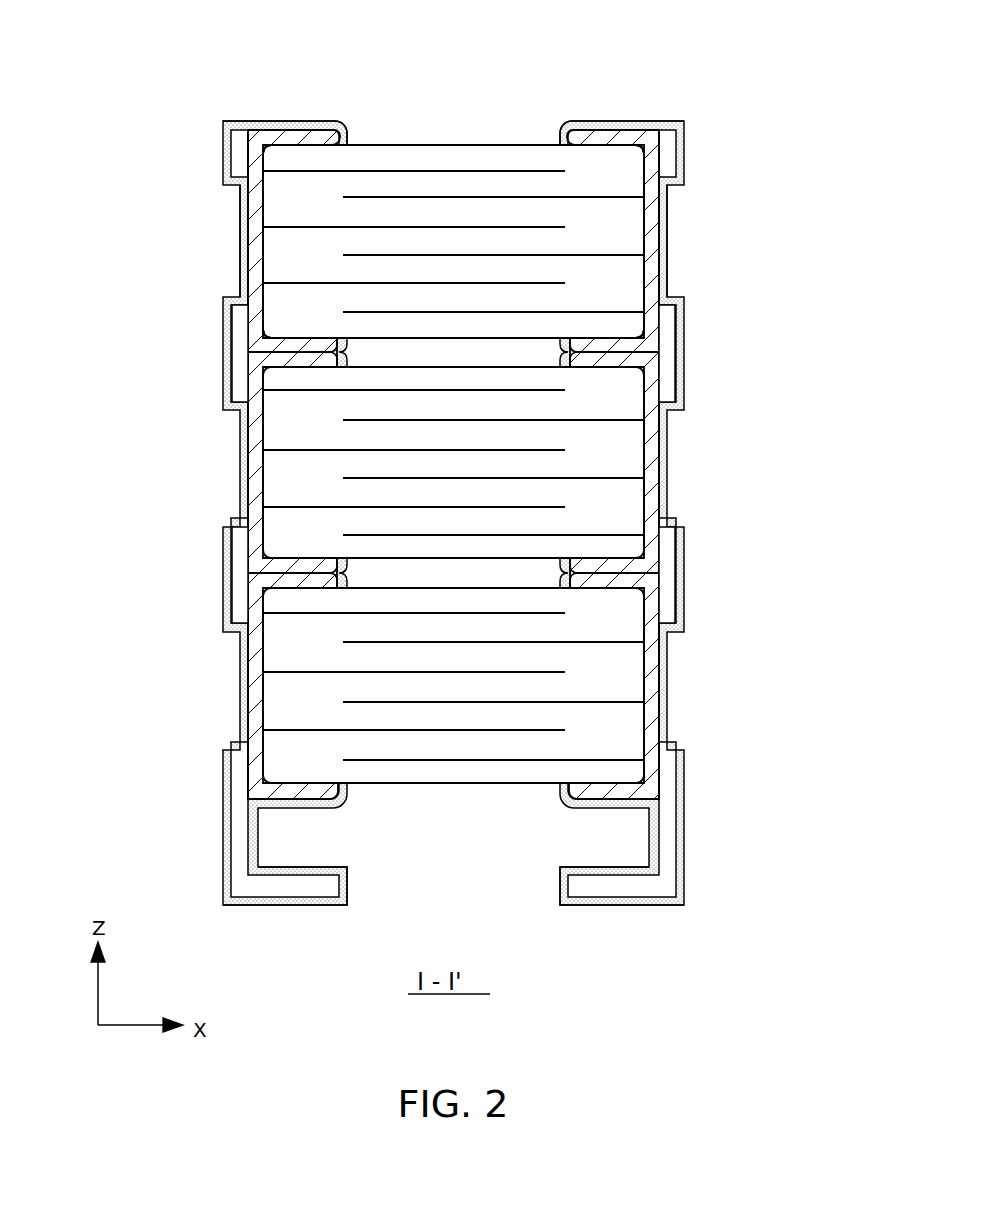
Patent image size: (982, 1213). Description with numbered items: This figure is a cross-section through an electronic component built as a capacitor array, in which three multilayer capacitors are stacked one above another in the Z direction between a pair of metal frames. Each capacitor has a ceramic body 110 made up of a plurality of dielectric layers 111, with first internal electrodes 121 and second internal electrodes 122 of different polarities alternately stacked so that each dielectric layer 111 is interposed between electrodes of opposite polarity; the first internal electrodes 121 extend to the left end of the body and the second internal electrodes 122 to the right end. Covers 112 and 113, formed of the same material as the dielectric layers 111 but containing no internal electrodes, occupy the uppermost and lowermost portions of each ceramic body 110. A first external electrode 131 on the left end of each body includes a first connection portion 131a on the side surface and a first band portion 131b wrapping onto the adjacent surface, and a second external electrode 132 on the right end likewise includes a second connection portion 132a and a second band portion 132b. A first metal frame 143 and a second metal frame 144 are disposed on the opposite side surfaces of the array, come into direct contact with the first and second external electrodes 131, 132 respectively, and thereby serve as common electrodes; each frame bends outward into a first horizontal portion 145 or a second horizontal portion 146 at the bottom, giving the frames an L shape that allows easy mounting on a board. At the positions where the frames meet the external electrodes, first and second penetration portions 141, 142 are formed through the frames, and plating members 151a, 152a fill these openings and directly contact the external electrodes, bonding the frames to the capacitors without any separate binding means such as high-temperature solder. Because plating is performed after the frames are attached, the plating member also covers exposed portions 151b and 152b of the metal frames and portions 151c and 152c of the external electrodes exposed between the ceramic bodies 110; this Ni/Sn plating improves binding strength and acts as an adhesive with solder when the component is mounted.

The ceramic body 110 is at (418, 145).
The dielectric layer 111 is at (453, 233).
The cover 112 is at (490, 157).
The cover 113 is at (365, 327).
The first internal electrode 121 is at (526, 165).
The second internal electrode 122 is at (576, 197).
The first external electrode 131 is at (355, 43).
The first connection portion 131a is at (242, 150).
The first band portion 131b is at (314, 135).
The second external electrode 132 is at (747, 43).
The second connection portion 132a is at (668, 150).
The second band portion 132b is at (632, 135).
The first penetration portion 141 is at (245, 297).
The second penetration portion 142 is at (662, 297).
The first metal frame 143 is at (240, 340).
The second metal frame 144 is at (667, 340).
The first horizontal portion 145 is at (270, 907).
The second horizontal portion 146 is at (614, 907).
The plating member 151a is at (243, 240).
The exposed portion of metal frame 151b is at (227, 172).
The exposed portion of external electrode 151c is at (335, 353).
The plating member 152a is at (664, 240).
The exposed portion of metal frame 152b is at (680, 172).
The exposed portion of external electrode 152c is at (572, 353).